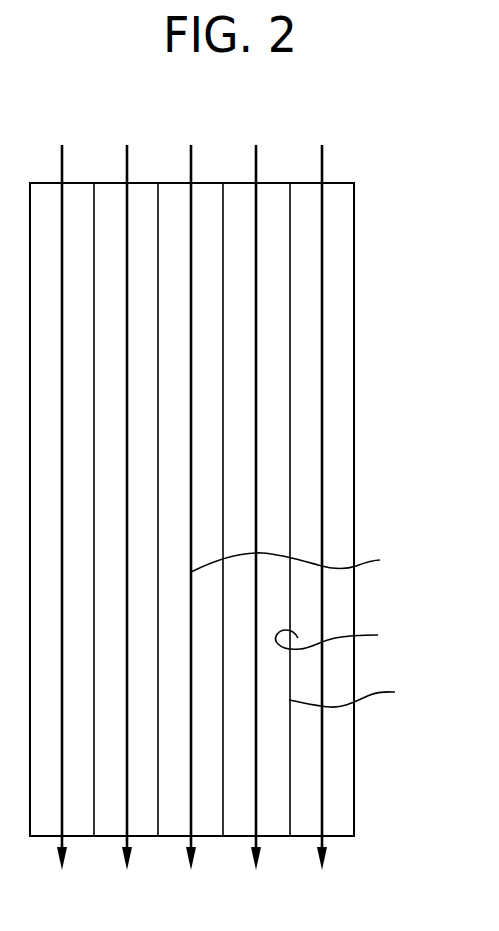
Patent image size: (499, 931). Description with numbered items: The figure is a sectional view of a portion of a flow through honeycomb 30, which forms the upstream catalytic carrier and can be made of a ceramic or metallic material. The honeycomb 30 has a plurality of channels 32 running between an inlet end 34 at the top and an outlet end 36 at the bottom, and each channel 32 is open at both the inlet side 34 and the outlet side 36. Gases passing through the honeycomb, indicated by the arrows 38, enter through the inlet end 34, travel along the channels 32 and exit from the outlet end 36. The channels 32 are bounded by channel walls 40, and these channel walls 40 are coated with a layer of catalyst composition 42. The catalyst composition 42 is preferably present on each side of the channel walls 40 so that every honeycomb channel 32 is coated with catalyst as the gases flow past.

The flow through honeycomb 30 is at (393, 237).
The channels 32 is at (116, 190).
The inlet end 34 is at (354, 183).
The outlet end 36 is at (340, 837).
The arrows 38 is at (302, 562).
The channel walls 40 is at (360, 692).
The layer of catalyst composition 42 is at (347, 635).